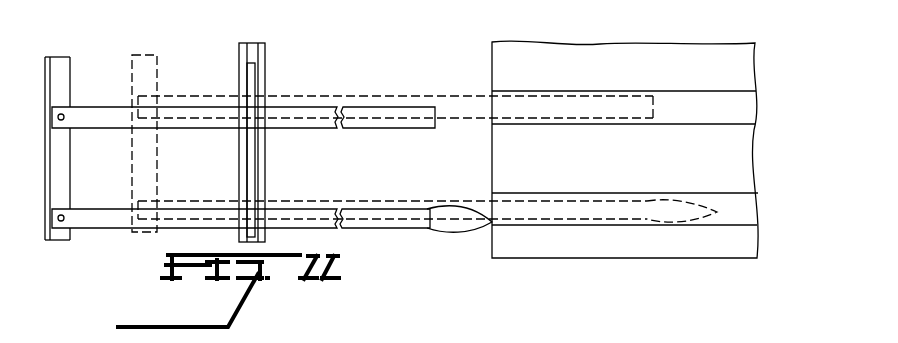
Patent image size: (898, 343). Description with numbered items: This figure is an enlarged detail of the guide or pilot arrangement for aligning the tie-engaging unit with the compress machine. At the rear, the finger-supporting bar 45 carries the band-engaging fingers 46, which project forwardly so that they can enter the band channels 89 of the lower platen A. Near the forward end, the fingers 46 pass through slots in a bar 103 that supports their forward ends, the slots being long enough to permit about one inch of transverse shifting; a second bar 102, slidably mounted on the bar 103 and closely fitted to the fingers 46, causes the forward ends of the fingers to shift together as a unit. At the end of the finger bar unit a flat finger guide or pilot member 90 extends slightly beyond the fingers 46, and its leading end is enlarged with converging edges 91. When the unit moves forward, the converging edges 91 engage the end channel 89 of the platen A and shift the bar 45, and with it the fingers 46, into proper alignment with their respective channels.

The finger-supporting bar 45 is at (133, 64).
The band-engaging fingers 46 is at (378, 115).
The channels 89 is at (600, 91).
The finger guide or pilot member 90 is at (380, 215).
The converging edges 91 is at (473, 231).
The second bar 102 is at (247, 81).
The bar 103 is at (258, 56).
The lower platen A is at (690, 258).